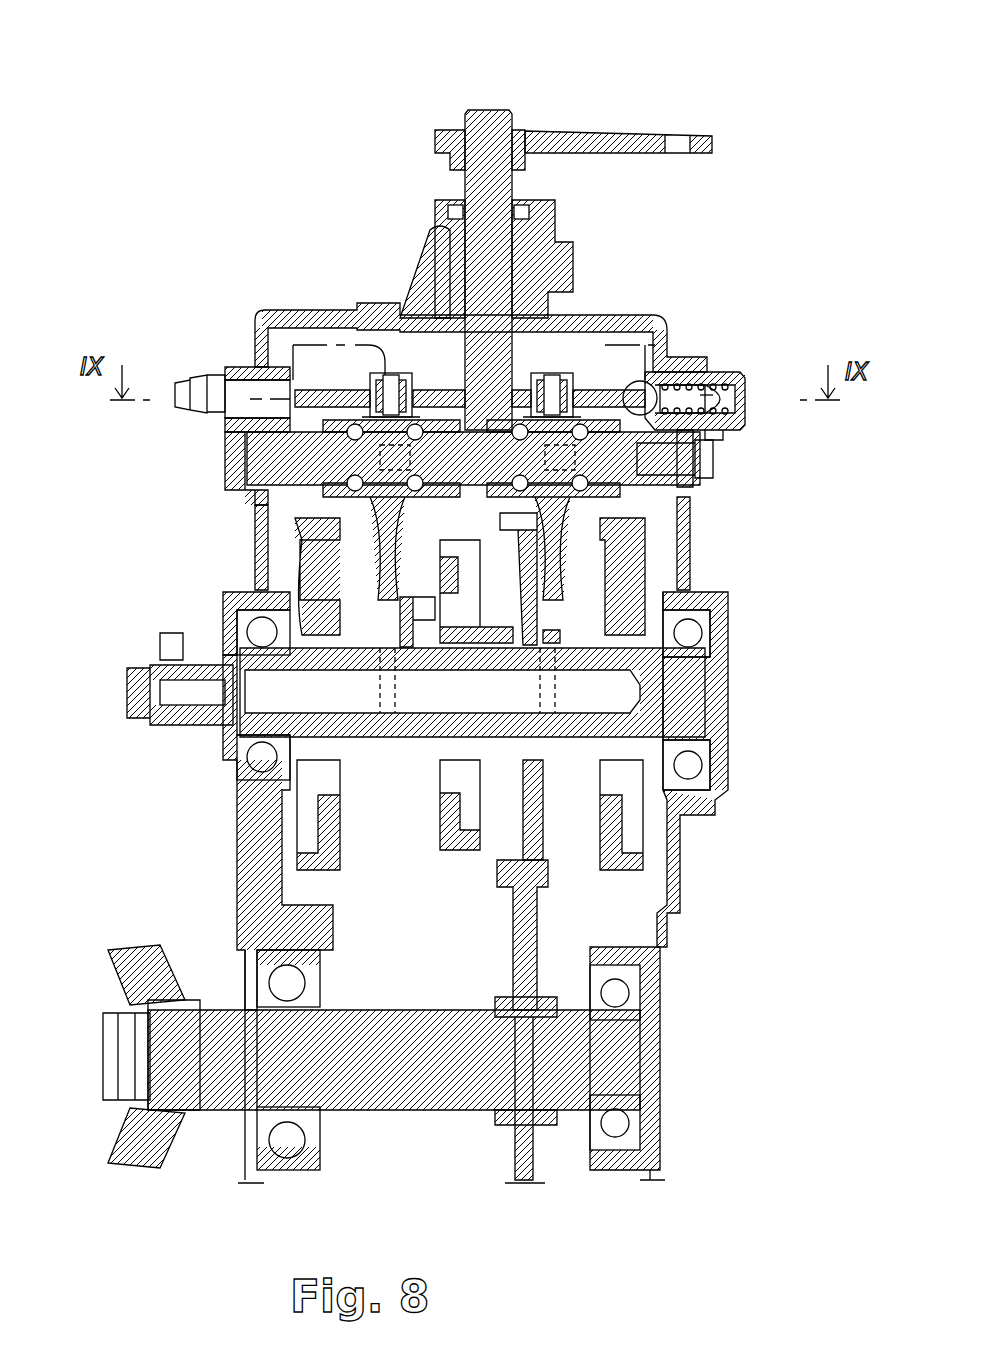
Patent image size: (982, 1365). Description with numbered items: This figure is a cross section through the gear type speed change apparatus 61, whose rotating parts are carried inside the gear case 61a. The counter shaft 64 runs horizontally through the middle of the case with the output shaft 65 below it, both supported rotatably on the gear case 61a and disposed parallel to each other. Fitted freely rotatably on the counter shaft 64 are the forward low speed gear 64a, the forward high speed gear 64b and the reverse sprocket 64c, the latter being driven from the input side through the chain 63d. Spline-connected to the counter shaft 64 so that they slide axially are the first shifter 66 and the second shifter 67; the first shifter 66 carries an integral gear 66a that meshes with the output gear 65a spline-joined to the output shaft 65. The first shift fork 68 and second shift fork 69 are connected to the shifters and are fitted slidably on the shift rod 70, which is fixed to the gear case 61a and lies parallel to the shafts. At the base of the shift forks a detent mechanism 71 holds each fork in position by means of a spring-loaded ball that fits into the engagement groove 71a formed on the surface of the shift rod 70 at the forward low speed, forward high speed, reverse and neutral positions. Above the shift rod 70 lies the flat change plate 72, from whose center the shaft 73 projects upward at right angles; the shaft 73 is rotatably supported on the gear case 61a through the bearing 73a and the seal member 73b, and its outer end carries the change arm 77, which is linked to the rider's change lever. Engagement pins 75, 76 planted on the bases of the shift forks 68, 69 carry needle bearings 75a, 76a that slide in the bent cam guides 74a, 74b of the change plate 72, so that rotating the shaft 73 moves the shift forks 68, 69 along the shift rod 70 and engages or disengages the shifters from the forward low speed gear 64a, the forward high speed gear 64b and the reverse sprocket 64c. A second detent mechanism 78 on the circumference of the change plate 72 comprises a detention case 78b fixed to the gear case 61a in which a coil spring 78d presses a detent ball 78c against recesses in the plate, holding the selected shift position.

The gear type speed change apparatus 61 is at (800, 742).
The gear case 61a is at (258, 560).
The chain 63d is at (302, 880).
The counter shaft 64 is at (700, 692).
The forward low speed gear 64a is at (605, 830).
The forward high speed gear 64b is at (462, 850).
The reverse sprocket 64c is at (305, 830).
The output shaft 65 is at (345, 1100).
The output gear 65a is at (510, 1150).
The first shifter 66 is at (565, 830).
The gear 66a is at (560, 787).
The second shifter 67 is at (445, 790).
The first shift fork 68 is at (610, 500).
The second shift fork 69 is at (290, 510).
The shift rod 70 is at (245, 470).
The detent mechanism 71 is at (230, 450).
The engagement groove 71a is at (600, 520).
The change plate 72 is at (645, 383).
The shaft 73 is at (462, 190).
The bearing 73a is at (447, 250).
The seal member 73b is at (437, 207).
The cam guide 74a is at (598, 388).
The cam guide 74b is at (258, 318).
The engagement pin 75 is at (551, 380).
The needle bearing 75a is at (567, 368).
The engagement pin 76 is at (335, 325).
The needle bearing 76a is at (352, 332).
The change arm 77 is at (598, 132).
The detent mechanism 78 is at (770, 403).
The detention case 78b is at (748, 378).
The detent ball 78c is at (695, 478).
The coil spring 78d is at (748, 425).